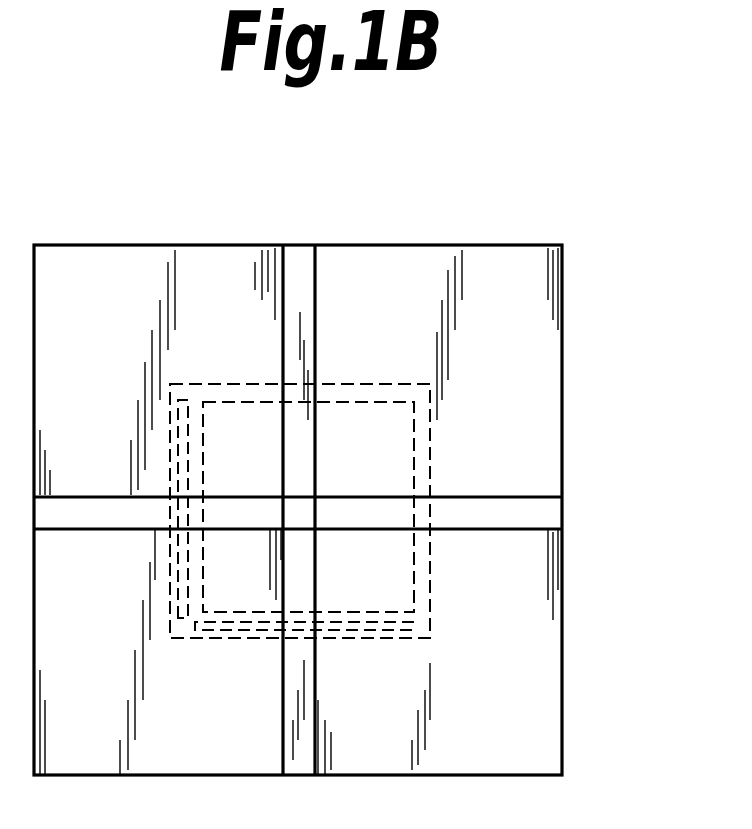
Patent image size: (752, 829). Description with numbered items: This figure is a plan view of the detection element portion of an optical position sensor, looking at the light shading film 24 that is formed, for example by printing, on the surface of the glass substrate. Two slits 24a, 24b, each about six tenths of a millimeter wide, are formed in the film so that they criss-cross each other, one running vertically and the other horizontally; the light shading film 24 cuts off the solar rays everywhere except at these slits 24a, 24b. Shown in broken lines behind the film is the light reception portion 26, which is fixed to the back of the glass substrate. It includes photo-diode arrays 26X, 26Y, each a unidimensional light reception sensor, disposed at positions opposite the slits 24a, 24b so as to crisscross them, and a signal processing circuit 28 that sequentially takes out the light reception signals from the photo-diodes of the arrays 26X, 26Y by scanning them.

The light shading film 24 is at (541, 317).
The slit 24a is at (298, 260).
The slit 24b is at (541, 519).
The light reception portion 26 is at (430, 428).
The photo-diode array 26X is at (414, 628).
The photo-diode array 26Y is at (183, 398).
The signal processing circuit 28 is at (414, 575).